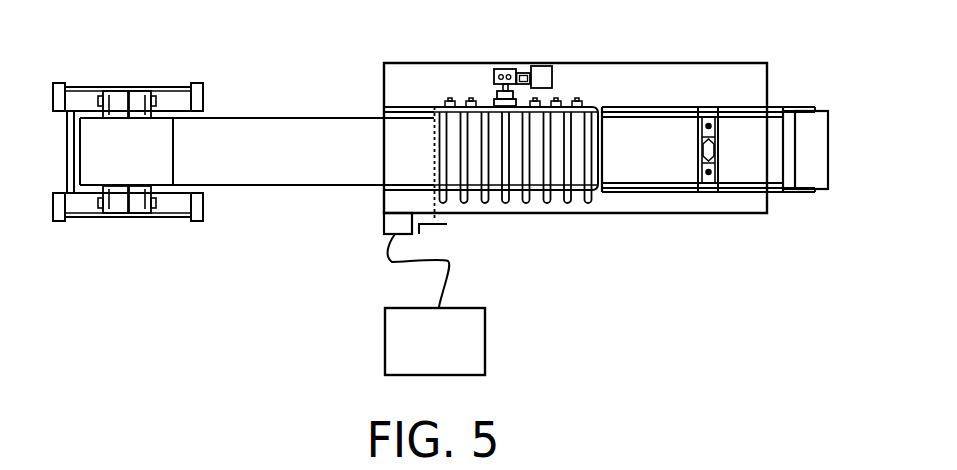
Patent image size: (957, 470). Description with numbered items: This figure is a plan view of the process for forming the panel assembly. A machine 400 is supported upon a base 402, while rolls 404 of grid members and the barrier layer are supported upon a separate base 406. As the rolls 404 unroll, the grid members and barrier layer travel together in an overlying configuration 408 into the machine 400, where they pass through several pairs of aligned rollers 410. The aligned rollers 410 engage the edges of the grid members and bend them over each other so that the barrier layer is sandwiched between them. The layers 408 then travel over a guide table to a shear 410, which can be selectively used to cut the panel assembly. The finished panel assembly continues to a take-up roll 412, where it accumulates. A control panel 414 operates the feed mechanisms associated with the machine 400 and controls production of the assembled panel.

The machine 400 is at (650, 190).
The base 402 is at (687, 80).
The rolls 404 is at (162, 142).
The base 406 is at (165, 98).
The overlying configuration 408 is at (305, 185).
The aligned rollers 410 is at (526, 203).
The take-up roll 412 is at (818, 152).
The control panel 414 is at (485, 338).